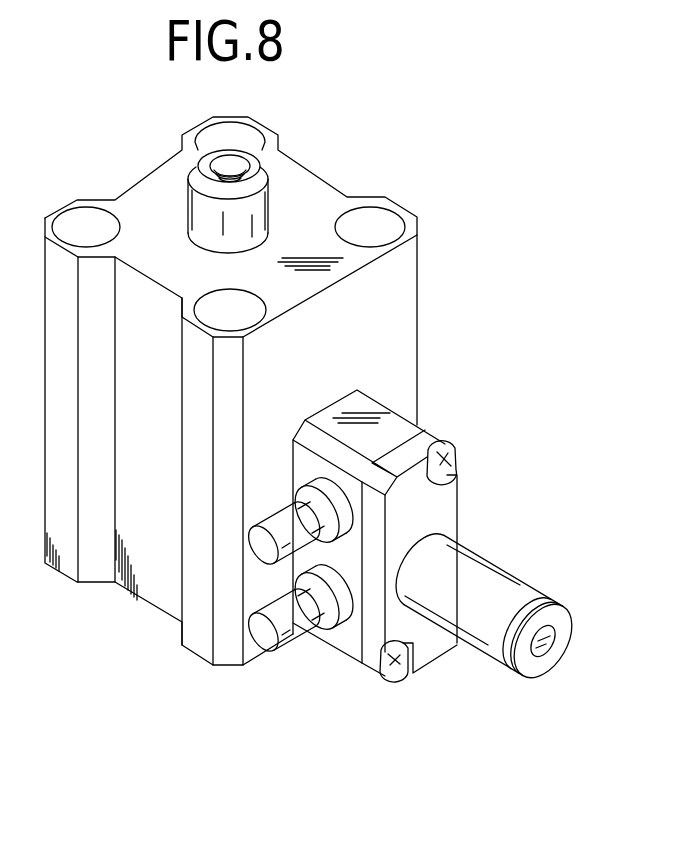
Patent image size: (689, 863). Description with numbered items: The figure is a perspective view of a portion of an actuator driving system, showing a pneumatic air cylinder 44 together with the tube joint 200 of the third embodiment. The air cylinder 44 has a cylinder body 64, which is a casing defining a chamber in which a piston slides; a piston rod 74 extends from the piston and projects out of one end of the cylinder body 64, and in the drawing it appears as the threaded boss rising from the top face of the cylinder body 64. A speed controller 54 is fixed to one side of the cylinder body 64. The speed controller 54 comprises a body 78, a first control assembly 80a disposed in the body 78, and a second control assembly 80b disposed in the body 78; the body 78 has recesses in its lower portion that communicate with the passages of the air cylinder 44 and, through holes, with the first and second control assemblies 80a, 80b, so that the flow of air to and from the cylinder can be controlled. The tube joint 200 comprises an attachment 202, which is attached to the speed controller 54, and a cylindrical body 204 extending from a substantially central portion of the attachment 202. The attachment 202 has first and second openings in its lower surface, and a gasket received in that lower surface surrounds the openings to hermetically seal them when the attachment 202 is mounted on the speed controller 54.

The air cylinder 44 is at (333, 177).
The cylinder body 64 is at (405, 278).
The piston rod 74 is at (238, 213).
The body 78 is at (355, 645).
The first control assembly 80a is at (338, 635).
The second control assembly 80b is at (305, 478).
The speed controller 54 is at (328, 650).
The tube joint 200 is at (518, 570).
The attachment 202 is at (445, 515).
The cylindrical body 204 is at (485, 628).